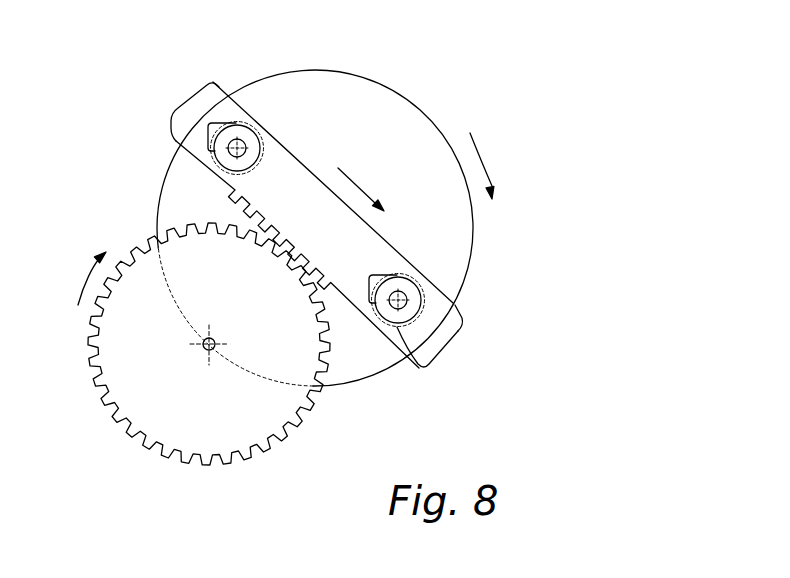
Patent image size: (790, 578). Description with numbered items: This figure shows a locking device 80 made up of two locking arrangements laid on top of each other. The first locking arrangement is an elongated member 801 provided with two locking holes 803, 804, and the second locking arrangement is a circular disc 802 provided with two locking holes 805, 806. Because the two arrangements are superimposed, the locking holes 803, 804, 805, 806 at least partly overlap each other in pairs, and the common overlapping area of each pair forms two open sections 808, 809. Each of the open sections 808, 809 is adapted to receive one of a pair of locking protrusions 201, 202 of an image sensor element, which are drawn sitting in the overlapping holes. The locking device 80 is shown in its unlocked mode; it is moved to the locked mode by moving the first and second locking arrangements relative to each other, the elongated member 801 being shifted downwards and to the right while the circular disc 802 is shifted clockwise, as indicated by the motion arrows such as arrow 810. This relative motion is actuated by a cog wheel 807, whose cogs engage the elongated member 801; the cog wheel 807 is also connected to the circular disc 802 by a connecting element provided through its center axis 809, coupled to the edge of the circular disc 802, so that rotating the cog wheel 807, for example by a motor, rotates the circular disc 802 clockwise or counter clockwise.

The locking device 80 is at (546, 133).
The elongated member 801 is at (440, 335).
The circular disc 802 is at (407, 140).
The locking hole 803 is at (432, 302).
The locking hole 804 is at (236, 147).
The locking hole 805 is at (423, 366).
The locking hole 806 is at (263, 152).
The cog wheel 807 is at (222, 424).
The open section 808 is at (455, 303).
The open section 809 is at (200, 158).
The direction of motion 810 is at (338, 324).
The locking protrusion 201 is at (400, 292).
The locking protrusion 202 is at (237, 131).